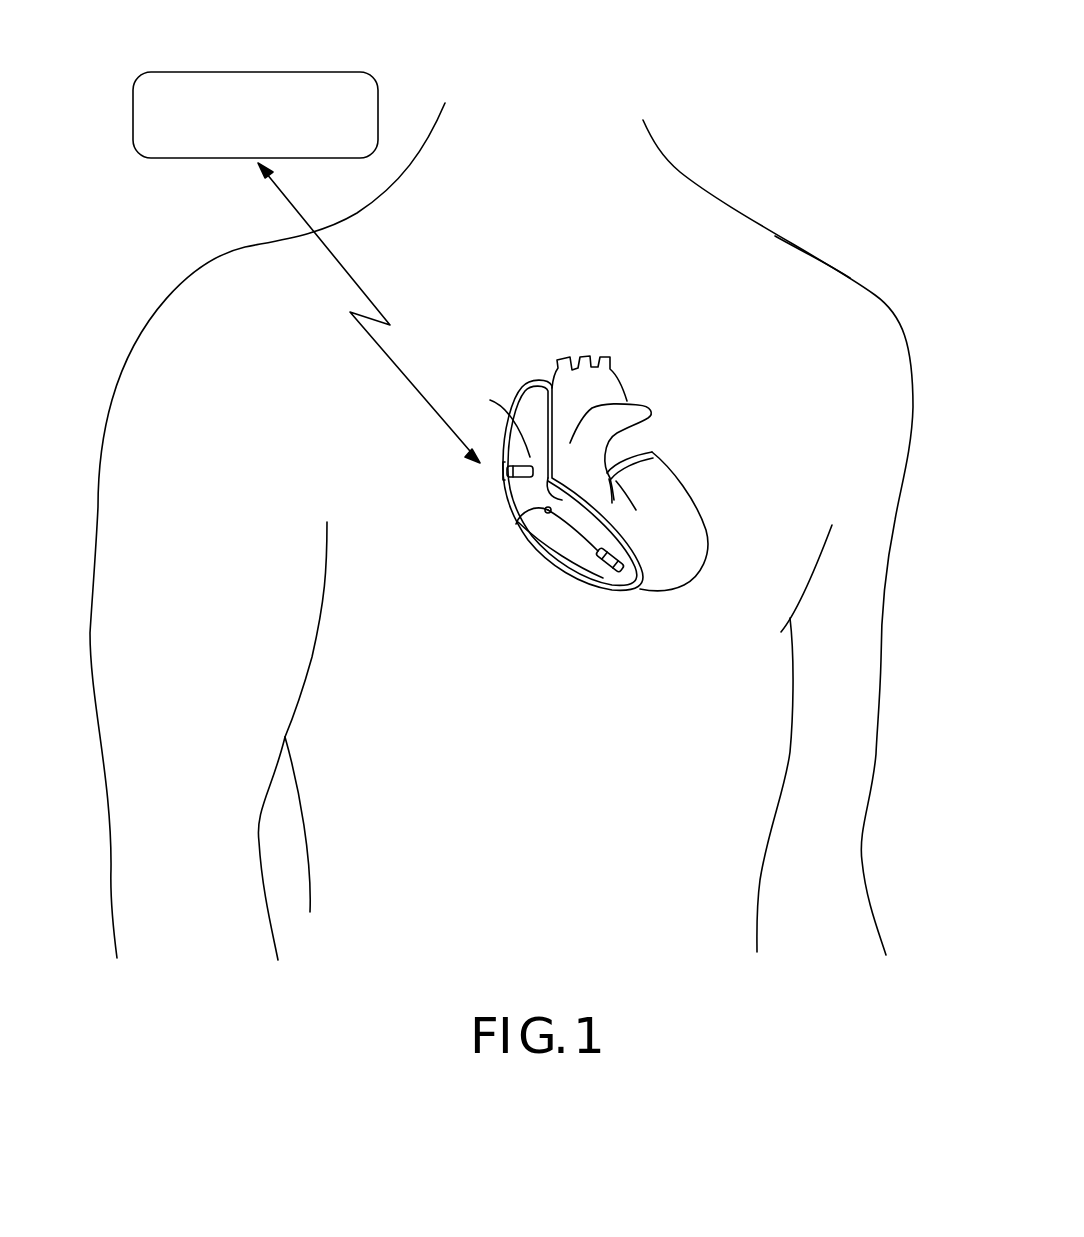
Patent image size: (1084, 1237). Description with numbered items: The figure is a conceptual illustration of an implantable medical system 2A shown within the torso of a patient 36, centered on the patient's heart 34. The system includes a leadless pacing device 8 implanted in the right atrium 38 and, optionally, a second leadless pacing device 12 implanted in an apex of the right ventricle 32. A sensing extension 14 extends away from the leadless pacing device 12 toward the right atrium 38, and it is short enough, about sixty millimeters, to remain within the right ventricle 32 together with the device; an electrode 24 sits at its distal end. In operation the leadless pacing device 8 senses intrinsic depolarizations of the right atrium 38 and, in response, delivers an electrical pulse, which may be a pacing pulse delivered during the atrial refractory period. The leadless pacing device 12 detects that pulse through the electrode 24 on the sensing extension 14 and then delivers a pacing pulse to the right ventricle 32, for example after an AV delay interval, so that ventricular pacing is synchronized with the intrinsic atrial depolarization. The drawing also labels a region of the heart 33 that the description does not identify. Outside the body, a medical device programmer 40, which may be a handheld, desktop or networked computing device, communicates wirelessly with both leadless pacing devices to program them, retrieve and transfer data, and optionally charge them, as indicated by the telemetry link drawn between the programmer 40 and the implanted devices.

The implantable medical system 2A is at (708, 80).
The patient 36 is at (802, 248).
The medical device programmer 40 is at (268, 140).
The heart 34 is at (712, 467).
The left ventricle 33 is at (690, 533).
The right ventricle 32 is at (575, 577).
The right atrium 38 is at (530, 457).
The leadless pacing device 8 is at (510, 497).
The electrode 24 is at (520, 517).
The sensing extension 14 is at (523, 555).
The leadless pacing device 12 is at (607, 575).